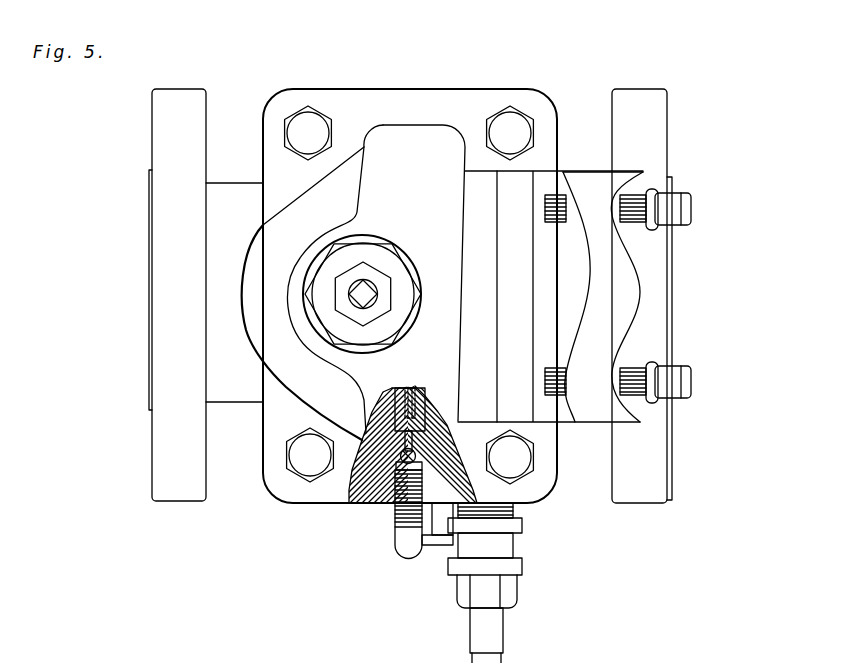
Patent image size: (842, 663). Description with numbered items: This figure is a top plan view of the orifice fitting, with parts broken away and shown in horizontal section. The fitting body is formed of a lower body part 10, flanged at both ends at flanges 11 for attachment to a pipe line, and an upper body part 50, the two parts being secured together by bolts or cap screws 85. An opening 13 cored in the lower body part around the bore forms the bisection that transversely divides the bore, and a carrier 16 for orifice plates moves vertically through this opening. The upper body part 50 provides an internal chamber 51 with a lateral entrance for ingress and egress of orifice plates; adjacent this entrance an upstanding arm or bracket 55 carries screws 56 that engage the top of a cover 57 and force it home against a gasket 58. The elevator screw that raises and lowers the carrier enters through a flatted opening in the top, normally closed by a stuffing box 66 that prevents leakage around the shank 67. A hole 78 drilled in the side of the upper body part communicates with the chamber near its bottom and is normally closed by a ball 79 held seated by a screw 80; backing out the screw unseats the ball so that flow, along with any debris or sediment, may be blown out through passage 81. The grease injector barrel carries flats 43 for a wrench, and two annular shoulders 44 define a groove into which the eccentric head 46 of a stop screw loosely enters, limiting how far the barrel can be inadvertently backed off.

The lower body part 10 is at (180, 343).
The flanges 11 is at (170, 442).
The opening 13 is at (422, 406).
The carrier 16 is at (414, 385).
The flats 43 is at (508, 597).
The annular shoulders 44 is at (516, 565).
The eccentric head 46 is at (440, 541).
The upper body part 50 is at (410, 147).
The chamber 51 is at (398, 411).
The upstanding arm or bracket 55 is at (632, 237).
The screws 56 is at (663, 207).
The cover 57 is at (549, 183).
The gasket 58 is at (498, 297).
The stuffing box 66 is at (358, 258).
The shank 67 is at (374, 287).
The hole 78 is at (409, 441).
The ball 79 is at (415, 456).
The screw 80 is at (408, 541).
The passage 81 is at (365, 492).
The bolts or cap screws 85 is at (309, 128).